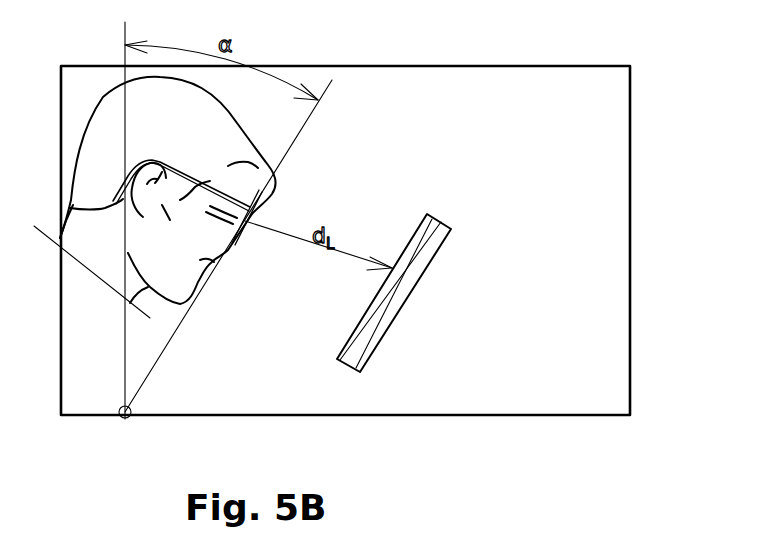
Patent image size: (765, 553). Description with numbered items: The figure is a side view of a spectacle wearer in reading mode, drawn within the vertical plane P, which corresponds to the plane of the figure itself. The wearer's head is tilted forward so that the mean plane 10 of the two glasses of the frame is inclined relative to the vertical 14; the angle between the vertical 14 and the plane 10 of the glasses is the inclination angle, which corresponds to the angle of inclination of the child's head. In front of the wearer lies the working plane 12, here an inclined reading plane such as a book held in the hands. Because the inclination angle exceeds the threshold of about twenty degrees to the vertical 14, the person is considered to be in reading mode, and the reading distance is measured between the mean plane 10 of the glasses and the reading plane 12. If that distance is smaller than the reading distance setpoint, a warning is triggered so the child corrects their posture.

The vertical 14 is at (123, 58).
The mean plane of the two glasses 10 is at (312, 113).
The working plane 12 is at (395, 293).
The vertical plane P is at (607, 105).